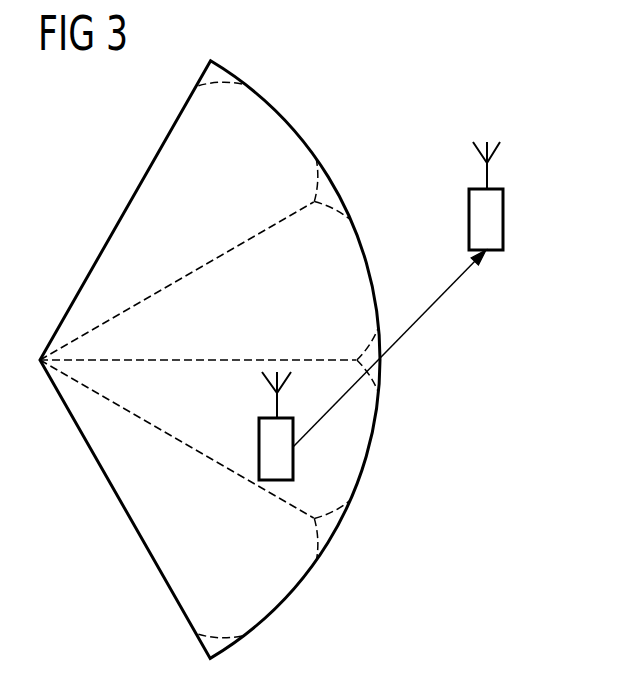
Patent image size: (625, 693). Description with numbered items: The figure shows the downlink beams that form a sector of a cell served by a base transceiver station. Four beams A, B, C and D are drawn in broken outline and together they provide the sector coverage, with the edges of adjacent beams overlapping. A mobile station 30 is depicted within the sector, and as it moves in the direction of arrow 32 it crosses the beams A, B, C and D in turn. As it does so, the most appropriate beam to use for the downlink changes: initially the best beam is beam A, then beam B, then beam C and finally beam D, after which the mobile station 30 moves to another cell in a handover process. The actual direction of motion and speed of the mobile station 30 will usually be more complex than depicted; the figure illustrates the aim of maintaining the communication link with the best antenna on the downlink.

The mobile station 30 is at (259, 448).
The arrow 32 is at (430, 308).
The beam A is at (255, 574).
The beam B is at (209, 439).
The beam C is at (209, 281).
The beam D is at (179, 221).